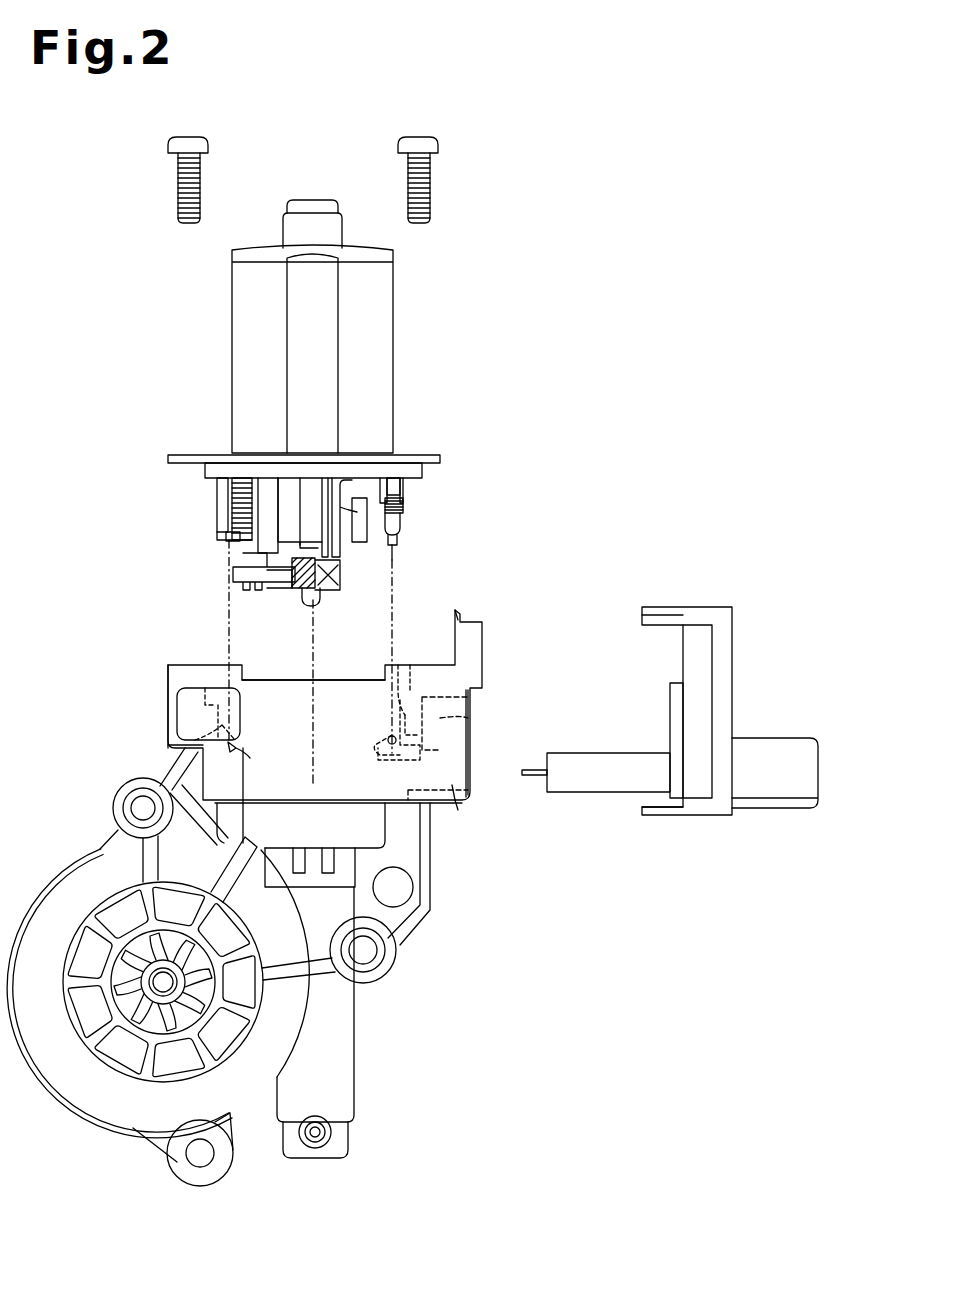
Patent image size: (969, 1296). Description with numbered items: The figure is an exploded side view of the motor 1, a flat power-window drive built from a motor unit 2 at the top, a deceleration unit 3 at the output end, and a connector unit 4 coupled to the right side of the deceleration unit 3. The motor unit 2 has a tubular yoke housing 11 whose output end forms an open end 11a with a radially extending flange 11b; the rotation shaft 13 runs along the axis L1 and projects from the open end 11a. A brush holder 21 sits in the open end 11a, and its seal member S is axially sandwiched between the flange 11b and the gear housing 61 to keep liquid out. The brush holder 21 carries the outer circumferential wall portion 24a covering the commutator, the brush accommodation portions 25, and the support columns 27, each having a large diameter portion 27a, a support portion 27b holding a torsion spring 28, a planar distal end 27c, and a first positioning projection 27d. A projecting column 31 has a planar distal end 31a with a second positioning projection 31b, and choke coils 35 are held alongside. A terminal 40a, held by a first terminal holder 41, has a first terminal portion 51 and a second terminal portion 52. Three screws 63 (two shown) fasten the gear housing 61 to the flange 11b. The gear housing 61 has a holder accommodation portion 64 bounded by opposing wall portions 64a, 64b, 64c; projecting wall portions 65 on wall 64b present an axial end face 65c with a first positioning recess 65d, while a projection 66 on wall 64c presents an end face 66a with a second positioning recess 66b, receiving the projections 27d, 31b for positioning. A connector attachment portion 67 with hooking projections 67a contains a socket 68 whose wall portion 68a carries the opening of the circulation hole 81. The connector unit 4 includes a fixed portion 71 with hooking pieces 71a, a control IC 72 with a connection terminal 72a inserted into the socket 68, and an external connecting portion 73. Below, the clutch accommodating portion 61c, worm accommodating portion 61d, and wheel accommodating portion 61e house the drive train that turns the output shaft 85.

The motor 1 is at (680, 284).
The motor unit 2 is at (478, 260).
The deceleration unit 3 is at (500, 641).
The connector unit 4 is at (738, 564).
The yoke housing 11 is at (383, 300).
The open end 11a is at (265, 475).
The flange 11b is at (168, 459).
The rotation shaft 13 is at (314, 606).
The brush holder 21 is at (216, 510).
The outer circumferential wall portion 24a is at (312, 470).
The brush accommodation portion 25 is at (336, 555).
The support column 27 is at (405, 518).
The large diameter portion 27a is at (405, 488).
The support portion 27b is at (392, 524).
The distal end 27c is at (400, 537).
The first positioning projection 27d is at (392, 556).
The torsion spring 28 is at (404, 505).
The projecting column 31 is at (216, 486).
The distal end 31a is at (228, 537).
The second positioning projection 31b is at (240, 574).
The choke coil 35 is at (238, 476).
The terminal 40a is at (290, 592).
The first terminal holder 41 is at (298, 592).
The first terminal portion 51 is at (342, 586).
The second terminal portion 52 is at (300, 548).
The gear housing 61 is at (168, 671).
The clutch accommodating portion 61c is at (368, 835).
The worm accommodating portion 61d is at (356, 1081).
The wheel accommodating portion 61e is at (72, 856).
The screw 63 is at (170, 177).
The holder accommodation portion 64 is at (211, 714).
The opposing wall portion 64a is at (256, 690).
The opposing wall portion 64b is at (462, 718).
The opposing wall portion 64c is at (178, 712).
The projecting wall portion 65 is at (386, 742).
The axial end face 65c is at (405, 672).
The first positioning recess 65d is at (376, 735).
The projection 66 is at (242, 750).
The end face 66a is at (170, 744).
The second positioning recess 66b is at (228, 742).
The connector attachment portion 67 is at (472, 736).
The hooking projection 67a is at (463, 617).
The socket 68 is at (403, 772).
The wall portion 68a is at (455, 787).
The fixed portion 71 is at (726, 645).
The hooking piece 71a is at (668, 606).
The control IC 72 is at (595, 794).
The connection terminal 72a is at (531, 778).
The external connecting portion 73 is at (772, 736).
The circulation hole 81 is at (405, 895).
The output shaft 85 is at (140, 968).
The seal member S is at (445, 463).
The axis L1 is at (320, 765).